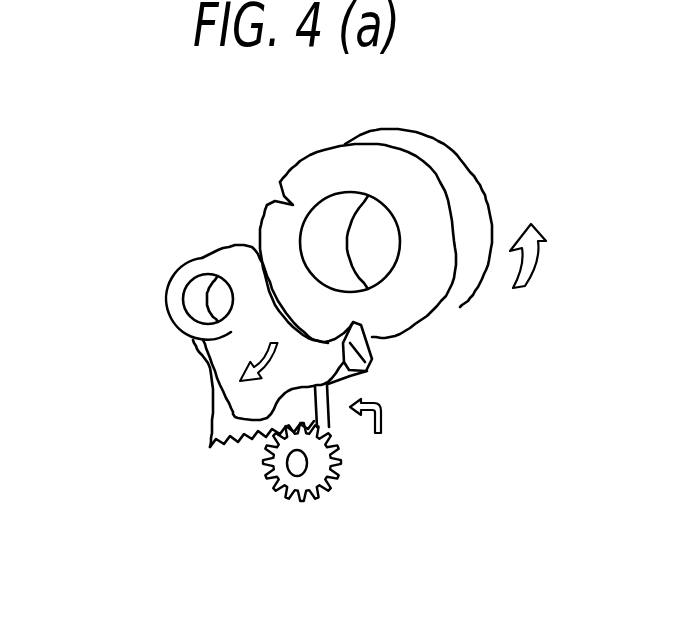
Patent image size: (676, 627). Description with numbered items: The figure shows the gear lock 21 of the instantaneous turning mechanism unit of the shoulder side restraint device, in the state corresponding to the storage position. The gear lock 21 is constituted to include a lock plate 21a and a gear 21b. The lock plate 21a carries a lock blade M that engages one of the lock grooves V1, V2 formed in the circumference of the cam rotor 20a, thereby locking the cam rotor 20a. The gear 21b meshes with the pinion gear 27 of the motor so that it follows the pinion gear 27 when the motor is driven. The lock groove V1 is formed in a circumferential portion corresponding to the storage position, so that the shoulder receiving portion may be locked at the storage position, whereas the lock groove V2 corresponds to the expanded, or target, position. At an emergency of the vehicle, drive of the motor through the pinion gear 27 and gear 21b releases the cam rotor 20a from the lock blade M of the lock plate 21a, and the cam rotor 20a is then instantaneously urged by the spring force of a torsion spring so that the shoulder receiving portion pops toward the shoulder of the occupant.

The cam rotor 20a is at (363, 253).
The gear lock 21 is at (250, 368).
The lock plate 21a is at (193, 340).
The gear 21b is at (232, 443).
The pinion gear 27 is at (337, 483).
The lock groove V1 is at (361, 326).
The lock groove V2 is at (278, 198).
The lock blade M is at (372, 362).